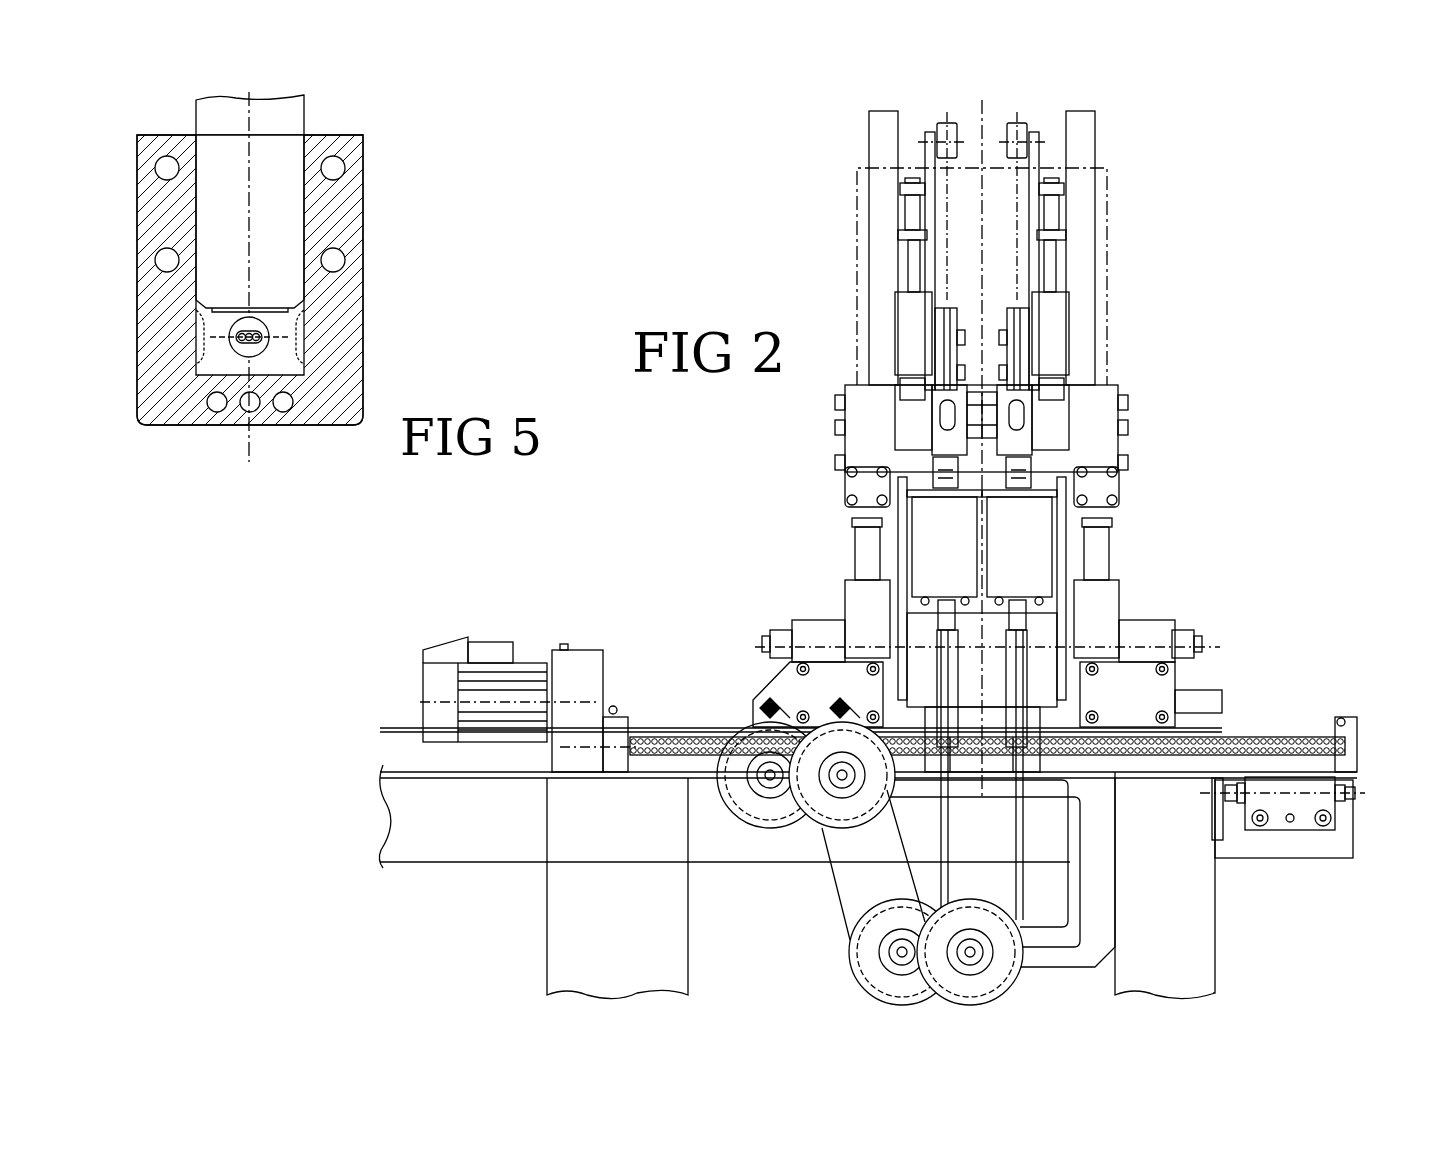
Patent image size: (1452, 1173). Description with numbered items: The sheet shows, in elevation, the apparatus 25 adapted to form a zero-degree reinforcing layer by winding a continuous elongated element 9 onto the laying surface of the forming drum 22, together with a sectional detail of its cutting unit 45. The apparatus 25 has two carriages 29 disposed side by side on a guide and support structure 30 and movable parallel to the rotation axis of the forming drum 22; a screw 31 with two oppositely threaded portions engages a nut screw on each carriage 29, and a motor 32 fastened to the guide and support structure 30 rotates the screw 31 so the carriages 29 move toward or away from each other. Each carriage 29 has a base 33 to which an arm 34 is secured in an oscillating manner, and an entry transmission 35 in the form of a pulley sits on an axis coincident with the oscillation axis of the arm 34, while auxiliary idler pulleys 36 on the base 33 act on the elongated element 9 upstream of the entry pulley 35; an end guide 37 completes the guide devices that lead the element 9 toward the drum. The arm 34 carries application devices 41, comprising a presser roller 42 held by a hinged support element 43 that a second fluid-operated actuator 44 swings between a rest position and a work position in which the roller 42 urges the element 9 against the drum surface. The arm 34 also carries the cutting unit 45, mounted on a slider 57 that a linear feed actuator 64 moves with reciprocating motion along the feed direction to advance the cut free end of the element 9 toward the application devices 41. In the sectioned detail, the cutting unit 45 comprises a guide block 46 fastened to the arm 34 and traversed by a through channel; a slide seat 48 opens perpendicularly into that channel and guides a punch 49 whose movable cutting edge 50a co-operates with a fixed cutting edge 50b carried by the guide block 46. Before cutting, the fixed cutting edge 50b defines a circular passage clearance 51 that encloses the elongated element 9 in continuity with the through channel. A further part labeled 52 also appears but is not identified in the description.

In FIG. 5, the continuous elongated element 9 is at (232, 337).
In FIG. 2, the continuous elongated element 9 is at (946, 815).
In FIG. 2, the forming drum 22 is at (1110, 300).
In FIG. 2, the apparatus 25 is at (1158, 352).
In FIG. 2, the carriage 29 is at (760, 690).
In FIG. 2, the guide and support structure 30 is at (403, 822).
In FIG. 2, the screw 31 is at (670, 737).
In FIG. 2, the motor 32 is at (515, 683).
In FIG. 2, the base 33 is at (795, 618).
In FIG. 2, the arm 34 is at (880, 232).
In FIG. 2, the entry transmission 35 is at (947, 593).
In FIG. 2, the auxiliary idler pulleys 36 is at (933, 680).
In FIG. 2, the end guide 37 is at (958, 302).
In FIG. 2, the application devices 41 is at (935, 125).
In FIG. 2, the presser roller 42 is at (1027, 130).
In FIG. 2, the support element 43 is at (1040, 158).
In FIG. 2, the second fluid-operated actuator 44 is at (905, 325).
In FIG. 5, the cutting unit 45 is at (410, 181).
In FIG. 2, the cutting unit 45 is at (960, 470).
In FIG. 5, the guide block 46 is at (368, 238).
In FIG. 5, the slide seat 48 is at (210, 225).
In FIG. 5, the punch 49 is at (300, 122).
In FIG. 5, the movable cutting edge 50a is at (283, 313).
In FIG. 5, the fixed cutting edge 50b is at (215, 365).
In FIG. 5, the passage clearance 51 is at (255, 343).
In FIG. 2, the cylinder 52 is at (943, 537).
In FIG. 2, the slider 57 is at (862, 444).
In FIG. 2, the linear feed actuator 64 is at (853, 607).